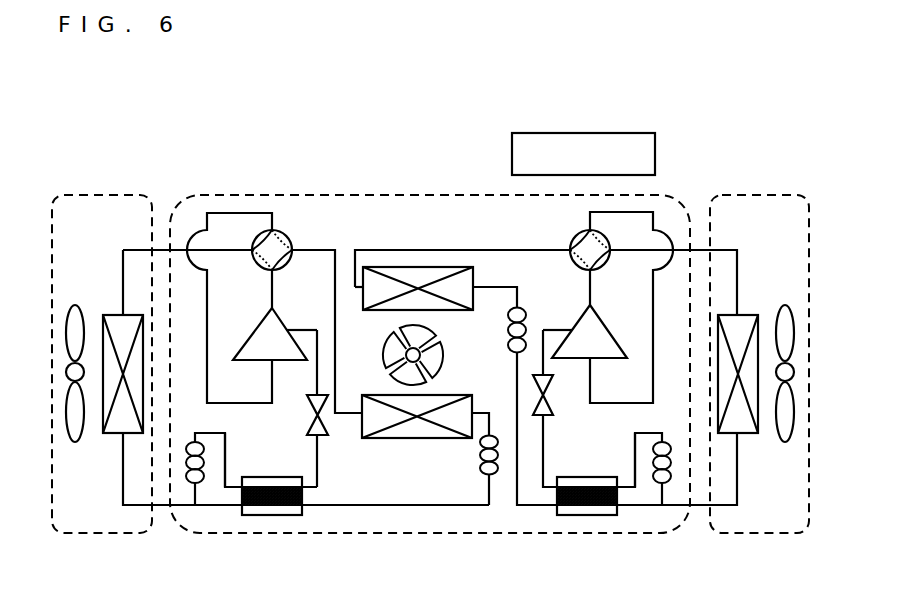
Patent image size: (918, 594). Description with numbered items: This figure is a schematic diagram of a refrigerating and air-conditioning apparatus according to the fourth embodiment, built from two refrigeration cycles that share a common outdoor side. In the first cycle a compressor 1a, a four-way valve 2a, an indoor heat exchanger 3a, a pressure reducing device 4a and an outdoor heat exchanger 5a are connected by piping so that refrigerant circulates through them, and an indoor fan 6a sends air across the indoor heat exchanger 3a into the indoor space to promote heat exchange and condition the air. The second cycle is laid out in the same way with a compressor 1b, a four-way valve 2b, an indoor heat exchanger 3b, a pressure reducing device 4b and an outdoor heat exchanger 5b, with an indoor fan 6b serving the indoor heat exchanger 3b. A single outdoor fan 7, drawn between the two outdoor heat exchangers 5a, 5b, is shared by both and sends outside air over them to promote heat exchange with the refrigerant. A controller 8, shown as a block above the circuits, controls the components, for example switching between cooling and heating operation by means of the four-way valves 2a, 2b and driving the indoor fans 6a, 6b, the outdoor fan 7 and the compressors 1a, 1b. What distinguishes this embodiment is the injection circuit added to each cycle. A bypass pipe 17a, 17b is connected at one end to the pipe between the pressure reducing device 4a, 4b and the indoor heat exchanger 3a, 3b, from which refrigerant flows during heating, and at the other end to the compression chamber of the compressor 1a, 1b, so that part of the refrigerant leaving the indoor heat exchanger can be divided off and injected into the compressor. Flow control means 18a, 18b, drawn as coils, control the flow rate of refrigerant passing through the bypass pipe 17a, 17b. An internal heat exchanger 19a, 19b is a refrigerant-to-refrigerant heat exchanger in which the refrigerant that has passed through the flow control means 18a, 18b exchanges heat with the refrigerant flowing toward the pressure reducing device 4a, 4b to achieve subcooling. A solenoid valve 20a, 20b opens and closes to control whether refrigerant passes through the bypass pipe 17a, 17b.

The compressor 1a is at (262, 340).
The compressor 1b is at (603, 330).
The four-way valve 2a is at (290, 240).
The four-way valve 2b is at (572, 240).
The indoor heat exchanger 3a is at (123, 318).
The indoor heat exchanger 3b is at (742, 318).
The pressure reducing device 4a is at (485, 455).
The pressure reducing device 4b is at (528, 318).
The outdoor heat exchanger 5a is at (415, 420).
The outdoor heat exchanger 5b is at (415, 275).
The indoor fan 6a is at (68, 325).
The indoor fan 6b is at (785, 322).
The outdoor fan 7 is at (440, 345).
The controller 8 is at (643, 165).
The bypass pipe 17a is at (225, 462).
The bypass pipe 17b is at (634, 468).
The flow control means 18a is at (197, 440).
The flow control means 18b is at (665, 440).
The internal heat exchanger 19a is at (263, 505).
The internal heat exchanger 19b is at (575, 513).
The solenoid valve 20a is at (320, 437).
The solenoid valve 20b is at (548, 405).